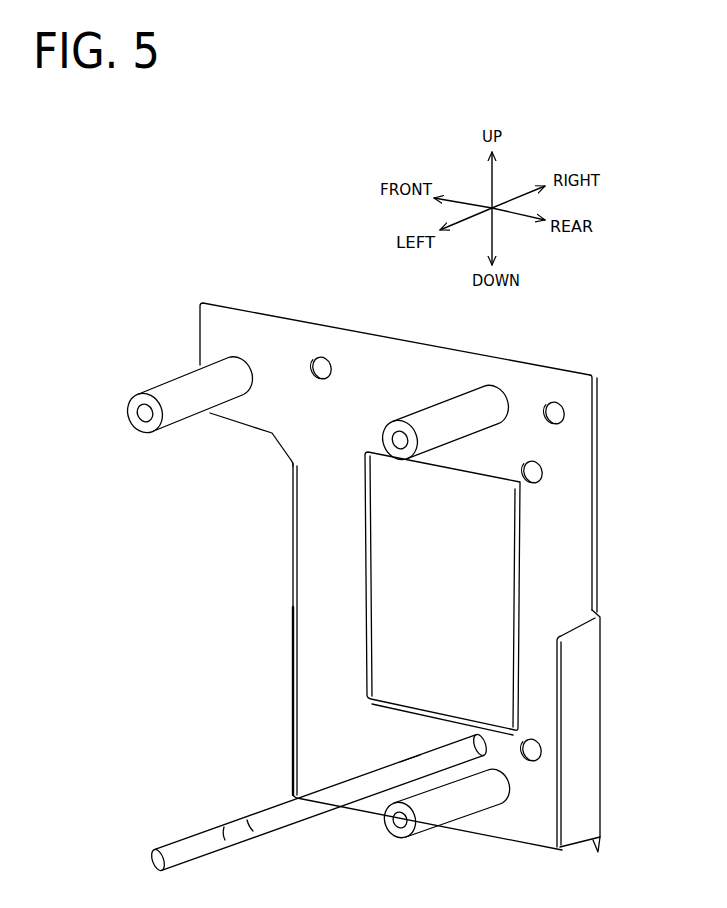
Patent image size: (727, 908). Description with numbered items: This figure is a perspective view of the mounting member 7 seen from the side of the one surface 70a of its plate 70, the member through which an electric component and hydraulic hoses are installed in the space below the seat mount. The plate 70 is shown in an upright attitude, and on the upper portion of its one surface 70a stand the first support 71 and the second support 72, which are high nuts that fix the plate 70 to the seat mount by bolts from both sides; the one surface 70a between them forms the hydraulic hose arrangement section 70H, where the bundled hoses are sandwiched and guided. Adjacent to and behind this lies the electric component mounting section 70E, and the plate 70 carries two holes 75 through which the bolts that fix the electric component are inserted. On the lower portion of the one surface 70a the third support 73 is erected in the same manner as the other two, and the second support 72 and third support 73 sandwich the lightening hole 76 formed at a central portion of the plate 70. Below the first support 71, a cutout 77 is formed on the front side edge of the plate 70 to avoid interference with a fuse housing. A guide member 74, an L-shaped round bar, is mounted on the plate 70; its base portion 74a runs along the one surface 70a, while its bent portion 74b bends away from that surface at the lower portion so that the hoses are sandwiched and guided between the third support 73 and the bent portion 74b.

The mounting member 7 is at (181, 290).
The plate 70 is at (594, 532).
The one surface 70a is at (316, 553).
The electric component mounting section 70E is at (560, 588).
The hydraulic hose arrangement section 70H is at (312, 507).
The first support 71 is at (156, 382).
The second support 72 is at (422, 405).
The third support 73 is at (430, 835).
The guide member 74 is at (222, 821).
The base portion 74a is at (410, 757).
The bent portion 74b is at (170, 843).
The holes 75 is at (546, 474).
The lightening hole 76 is at (413, 598).
The cutout 77 is at (292, 607).